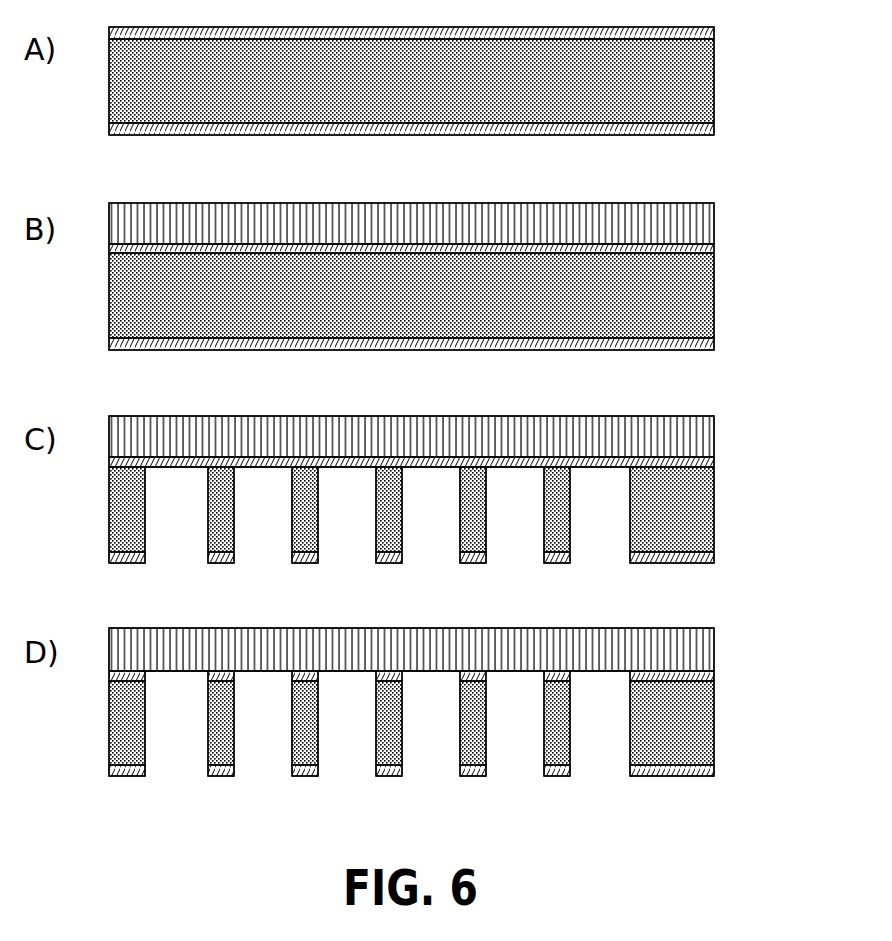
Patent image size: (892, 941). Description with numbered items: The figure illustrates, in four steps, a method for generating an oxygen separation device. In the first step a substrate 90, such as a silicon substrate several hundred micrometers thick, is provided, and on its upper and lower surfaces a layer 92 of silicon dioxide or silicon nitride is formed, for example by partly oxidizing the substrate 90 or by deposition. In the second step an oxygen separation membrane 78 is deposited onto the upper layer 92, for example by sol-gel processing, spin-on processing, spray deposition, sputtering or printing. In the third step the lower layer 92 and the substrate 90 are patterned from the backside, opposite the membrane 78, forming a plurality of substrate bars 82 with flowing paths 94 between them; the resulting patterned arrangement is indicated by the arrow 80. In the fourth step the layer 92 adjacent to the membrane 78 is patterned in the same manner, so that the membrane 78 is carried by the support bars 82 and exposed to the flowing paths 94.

The oxygen separation membrane 78 is at (714, 217).
The patterned structure 80 is at (98, 507).
The substrate bars 82 is at (714, 556).
The substrate 90 is at (714, 79).
The layer 92 is at (714, 34).
The flowing paths 94 is at (600, 556).